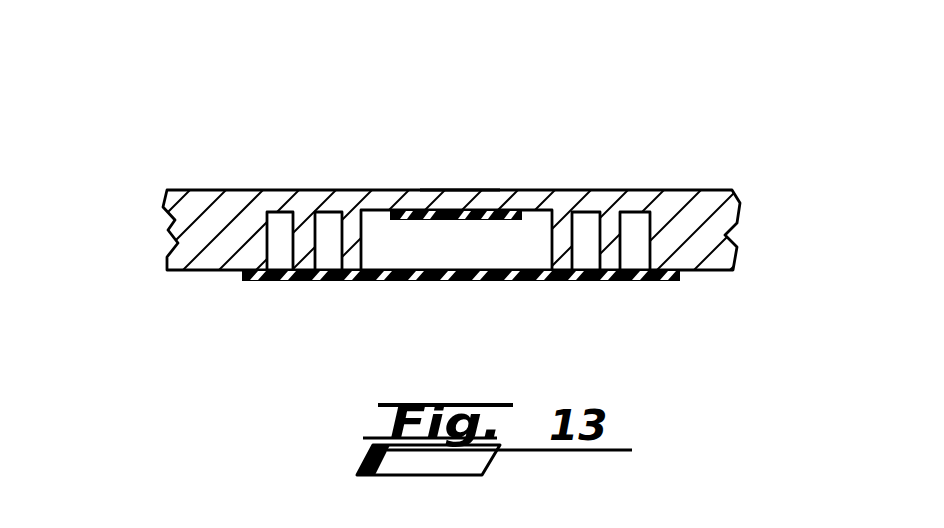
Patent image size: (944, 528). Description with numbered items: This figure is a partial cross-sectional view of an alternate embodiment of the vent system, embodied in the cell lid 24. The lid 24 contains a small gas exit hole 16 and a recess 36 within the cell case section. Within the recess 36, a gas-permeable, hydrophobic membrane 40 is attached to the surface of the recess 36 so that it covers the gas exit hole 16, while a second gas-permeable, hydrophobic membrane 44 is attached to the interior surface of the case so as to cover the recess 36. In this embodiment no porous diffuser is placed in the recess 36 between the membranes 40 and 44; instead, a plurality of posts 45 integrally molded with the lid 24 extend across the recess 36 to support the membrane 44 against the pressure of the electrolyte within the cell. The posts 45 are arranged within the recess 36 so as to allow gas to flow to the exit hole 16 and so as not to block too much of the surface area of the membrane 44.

The cell lid 24 is at (232, 189).
The gas exit hole 16 is at (457, 203).
The posts 45 is at (280, 212).
The recess 36 is at (282, 258).
The gas-permeable, hydrophobic membrane 40 is at (447, 220).
The gas-permeable, hydrophobic membrane 44 is at (635, 282).